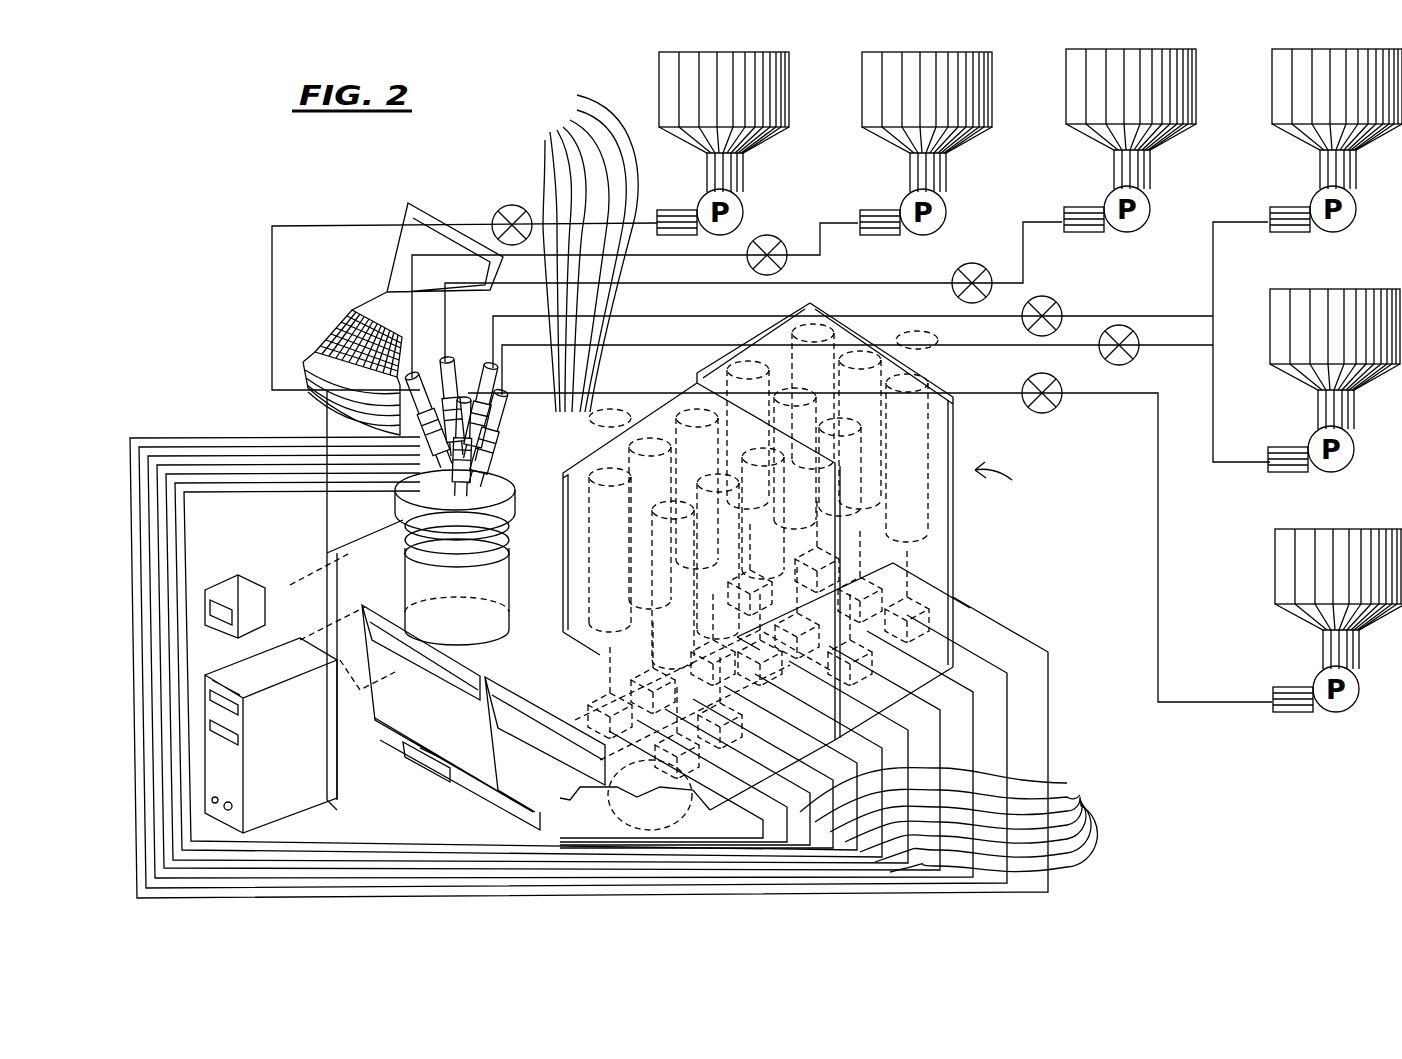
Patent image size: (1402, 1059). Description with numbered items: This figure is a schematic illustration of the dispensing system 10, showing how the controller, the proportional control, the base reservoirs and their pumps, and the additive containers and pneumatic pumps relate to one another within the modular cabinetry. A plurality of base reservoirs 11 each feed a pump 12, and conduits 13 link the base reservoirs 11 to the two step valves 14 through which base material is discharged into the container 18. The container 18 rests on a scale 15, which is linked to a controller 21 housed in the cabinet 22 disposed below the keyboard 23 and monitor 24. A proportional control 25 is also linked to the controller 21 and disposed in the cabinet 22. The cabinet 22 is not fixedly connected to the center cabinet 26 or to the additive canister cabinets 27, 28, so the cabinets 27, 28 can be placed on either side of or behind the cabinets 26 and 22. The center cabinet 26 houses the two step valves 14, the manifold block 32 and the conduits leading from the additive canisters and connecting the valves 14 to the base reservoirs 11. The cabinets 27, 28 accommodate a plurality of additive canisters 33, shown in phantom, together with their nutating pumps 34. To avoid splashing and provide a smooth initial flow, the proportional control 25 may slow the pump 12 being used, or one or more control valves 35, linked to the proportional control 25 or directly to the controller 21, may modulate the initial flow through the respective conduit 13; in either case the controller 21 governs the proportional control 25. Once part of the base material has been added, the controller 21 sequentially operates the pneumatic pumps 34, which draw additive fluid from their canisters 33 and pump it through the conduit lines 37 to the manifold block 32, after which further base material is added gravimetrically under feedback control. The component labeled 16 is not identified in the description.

The dispensing system 10 is at (1016, 486).
The base reservoirs 11 is at (762, 50).
The pumps 12 is at (703, 196).
The conduits 13 is at (586, 253).
The two step valves 14 is at (452, 375).
The scale 15 is at (372, 730).
The carriage 16 is at (428, 768).
The container 18 is at (505, 590).
The controller 21 is at (282, 668).
The cabinet 22 is at (325, 418).
The keyboard 23 is at (325, 325).
The monitor 24 is at (427, 256).
The proportional control 25 is at (245, 585).
The center cabinet 26 is at (473, 227).
The additive canister cabinet 27 is at (740, 300).
The additive canister cabinet 28 is at (845, 283).
The manifold block 32 is at (480, 510).
The additive canisters 33 is at (598, 423).
The nutating pumps 34 is at (935, 580).
The control valves 35 is at (508, 205).
The conduit line 37 is at (1047, 752).